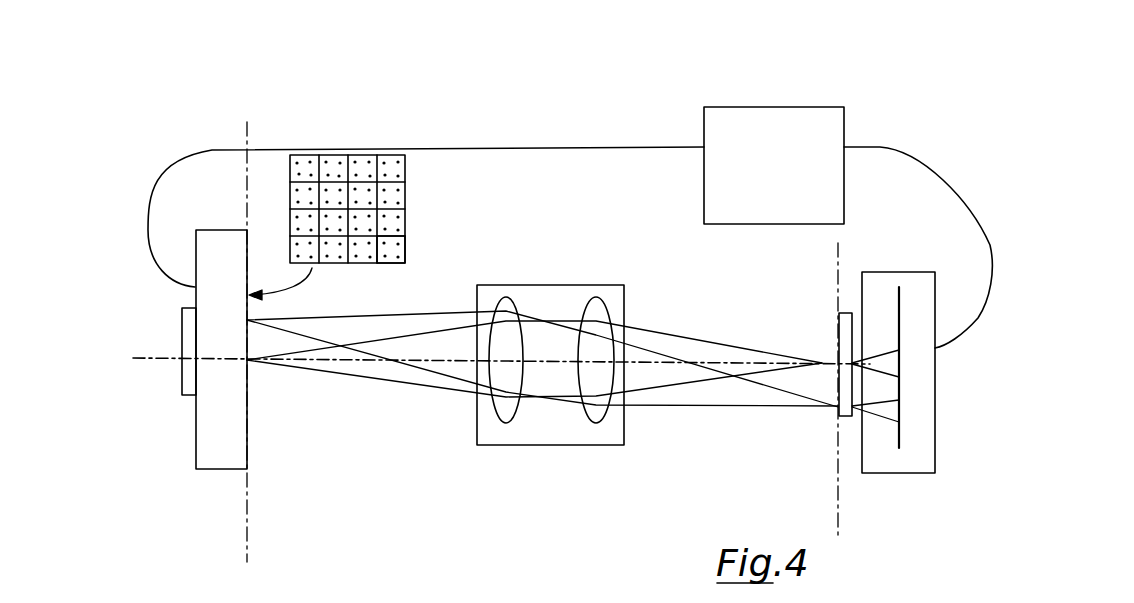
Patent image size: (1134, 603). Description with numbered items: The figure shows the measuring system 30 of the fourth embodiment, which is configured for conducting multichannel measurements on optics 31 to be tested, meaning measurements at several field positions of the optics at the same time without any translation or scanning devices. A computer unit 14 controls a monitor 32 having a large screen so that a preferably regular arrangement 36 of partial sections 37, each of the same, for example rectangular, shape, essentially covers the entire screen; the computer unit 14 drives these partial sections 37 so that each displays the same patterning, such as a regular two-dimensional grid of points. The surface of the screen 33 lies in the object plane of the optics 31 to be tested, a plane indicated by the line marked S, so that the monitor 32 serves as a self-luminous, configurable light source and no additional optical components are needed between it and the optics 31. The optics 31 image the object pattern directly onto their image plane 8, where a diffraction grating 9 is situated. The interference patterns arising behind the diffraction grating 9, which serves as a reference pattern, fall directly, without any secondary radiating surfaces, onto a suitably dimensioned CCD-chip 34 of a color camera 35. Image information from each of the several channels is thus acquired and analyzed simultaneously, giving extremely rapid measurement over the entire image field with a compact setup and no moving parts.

The computer unit 14 is at (830, 111).
The regular arrangement of partial sections 36 is at (414, 195).
The partial section 37 is at (395, 250).
The monitor 32 is at (208, 470).
The screen 33 is at (248, 440).
The sensor plane S is at (250, 516).
The measuring system 30 is at (383, 495).
The optics to be tested 31 is at (552, 440).
The diffraction grating 9 is at (842, 327).
The image plane 8 is at (843, 517).
The CCD-chip 34 is at (902, 392).
The color camera 35 is at (927, 473).